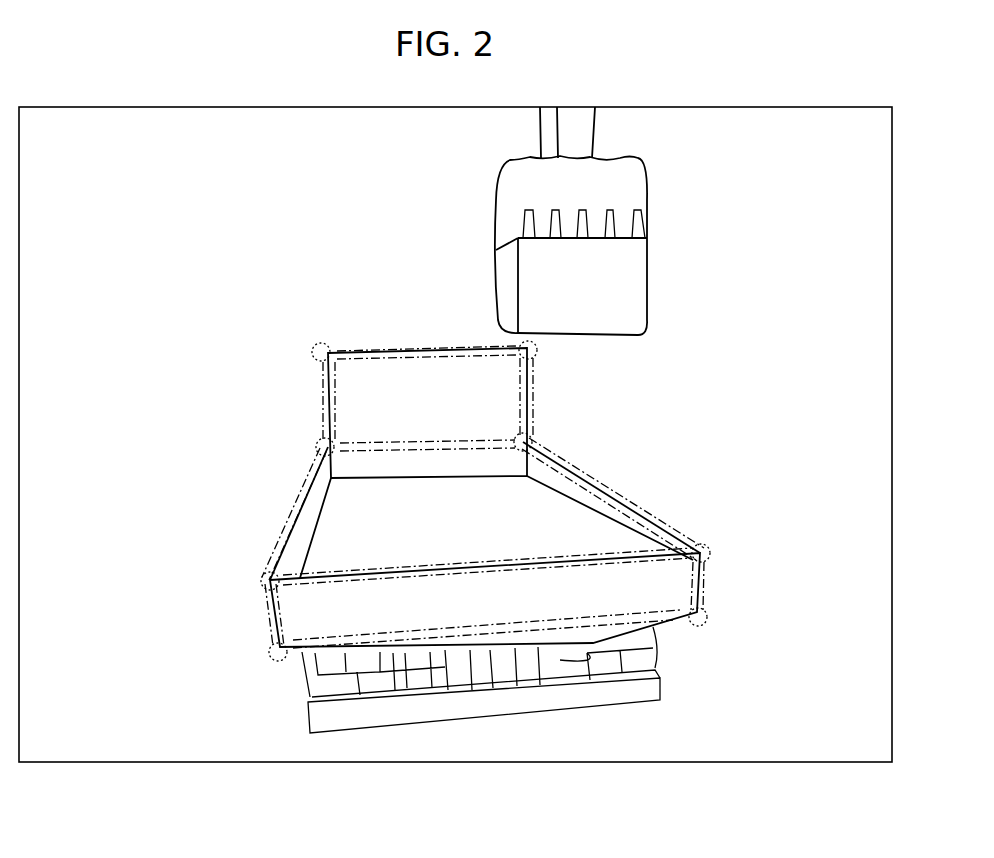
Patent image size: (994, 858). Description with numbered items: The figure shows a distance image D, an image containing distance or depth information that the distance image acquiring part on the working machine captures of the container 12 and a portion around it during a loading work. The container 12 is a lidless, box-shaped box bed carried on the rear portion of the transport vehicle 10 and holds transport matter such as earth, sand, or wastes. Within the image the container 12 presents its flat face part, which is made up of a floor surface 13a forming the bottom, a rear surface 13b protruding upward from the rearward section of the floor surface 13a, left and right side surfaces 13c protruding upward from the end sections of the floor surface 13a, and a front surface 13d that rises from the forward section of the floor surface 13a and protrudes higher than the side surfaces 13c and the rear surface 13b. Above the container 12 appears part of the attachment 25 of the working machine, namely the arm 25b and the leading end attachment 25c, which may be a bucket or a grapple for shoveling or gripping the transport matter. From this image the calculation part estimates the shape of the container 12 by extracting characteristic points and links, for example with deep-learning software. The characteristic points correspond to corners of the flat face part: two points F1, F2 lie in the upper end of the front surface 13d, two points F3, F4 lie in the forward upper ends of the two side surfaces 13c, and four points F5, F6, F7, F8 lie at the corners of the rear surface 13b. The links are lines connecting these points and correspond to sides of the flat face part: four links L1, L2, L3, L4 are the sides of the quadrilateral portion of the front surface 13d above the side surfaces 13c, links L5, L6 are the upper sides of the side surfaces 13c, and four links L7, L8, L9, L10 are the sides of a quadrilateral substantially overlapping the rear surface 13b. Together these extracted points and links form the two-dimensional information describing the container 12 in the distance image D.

The transport vehicle 10 is at (252, 246).
The container 12 is at (655, 597).
The floor surface 13a is at (455, 530).
The rear surface 13b is at (510, 612).
The side surfaces 13c is at (315, 520).
The front surface 13d is at (370, 365).
The attachment 25 is at (700, 326).
The arm 25b is at (593, 135).
The leading end attachment 25c is at (648, 255).
The distance image D is at (892, 193).
The characteristic point F1 is at (316, 345).
The characteristic point F2 is at (537, 352).
The characteristic point F3 is at (318, 445).
The characteristic point F4 is at (533, 441).
The characteristic point F5 is at (261, 581).
The characteristic point F6 is at (709, 552).
The characteristic point F7 is at (270, 660).
The characteristic point F8 is at (707, 619).
The link L1 is at (430, 345).
The link L2 is at (320, 372).
The link L3 is at (530, 395).
The link L4 is at (388, 440).
The link L5 is at (300, 484).
The link L6 is at (630, 490).
The link L7 is at (370, 566).
The link L8 is at (268, 620).
The link L9 is at (705, 585).
The link L10 is at (551, 630).